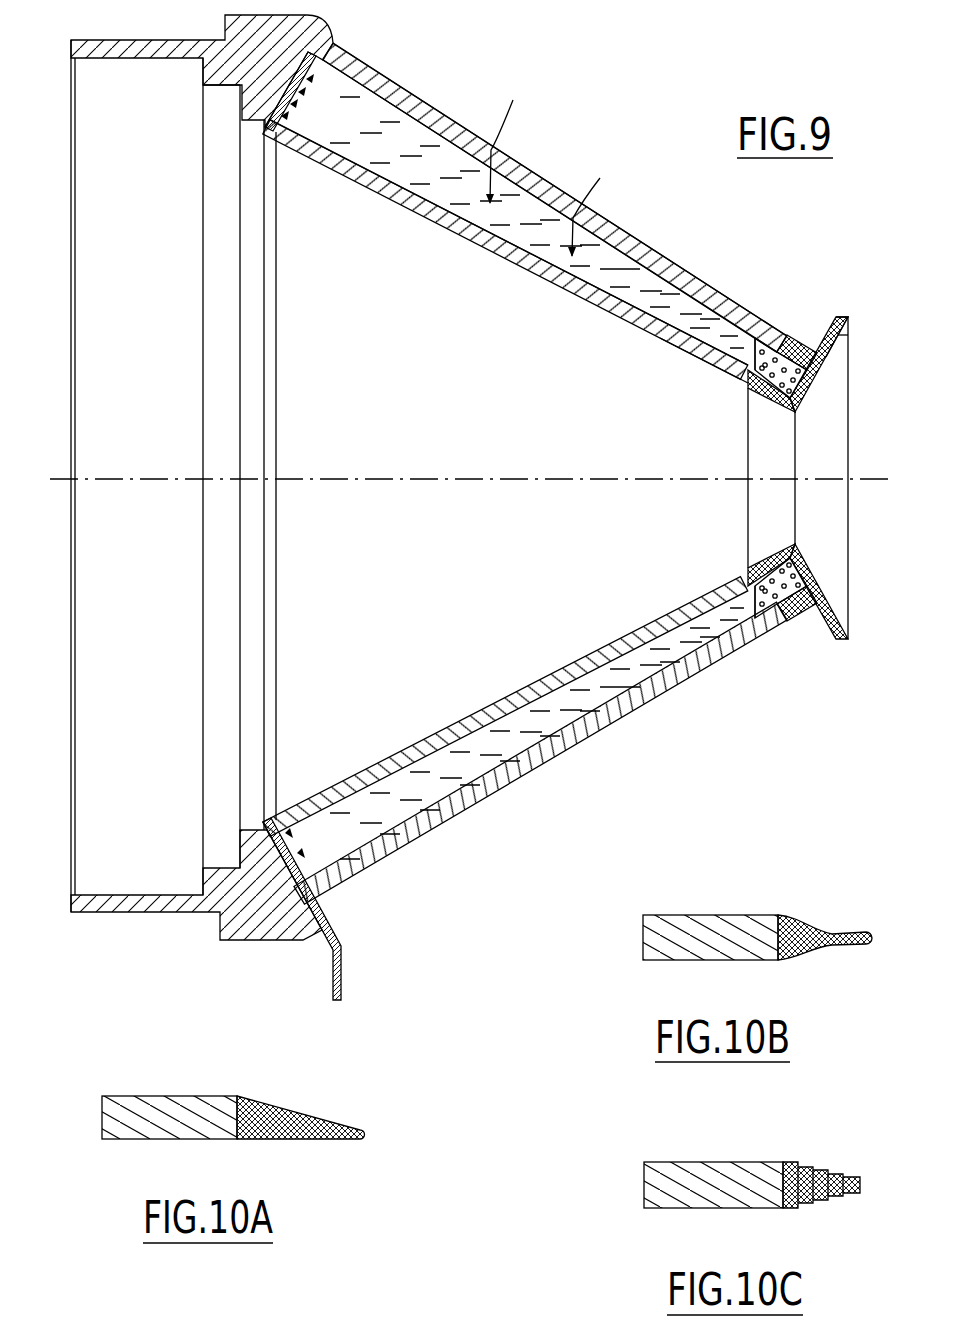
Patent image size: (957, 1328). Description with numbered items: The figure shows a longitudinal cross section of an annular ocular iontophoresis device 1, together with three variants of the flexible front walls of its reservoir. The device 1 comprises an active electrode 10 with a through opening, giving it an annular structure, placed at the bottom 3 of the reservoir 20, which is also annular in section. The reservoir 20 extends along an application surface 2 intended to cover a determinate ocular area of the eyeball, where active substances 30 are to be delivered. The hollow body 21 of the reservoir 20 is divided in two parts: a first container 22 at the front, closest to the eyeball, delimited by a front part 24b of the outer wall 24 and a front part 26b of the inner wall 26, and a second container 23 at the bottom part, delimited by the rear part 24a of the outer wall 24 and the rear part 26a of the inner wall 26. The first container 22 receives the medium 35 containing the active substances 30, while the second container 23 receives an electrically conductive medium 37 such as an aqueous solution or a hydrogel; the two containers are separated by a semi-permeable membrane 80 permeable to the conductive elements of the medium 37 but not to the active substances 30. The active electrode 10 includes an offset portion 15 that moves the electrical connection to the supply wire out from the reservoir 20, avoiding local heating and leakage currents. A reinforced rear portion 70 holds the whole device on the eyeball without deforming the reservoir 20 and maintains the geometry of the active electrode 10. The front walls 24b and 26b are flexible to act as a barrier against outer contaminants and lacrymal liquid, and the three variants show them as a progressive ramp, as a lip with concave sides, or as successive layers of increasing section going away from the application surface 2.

In FIG. 9, the device 1 is at (878, 482).
In FIG. 9, the application surface 2 is at (807, 557).
In FIG. 9, the bottom 3 is at (312, 74).
In FIG. 9, the active electrode 10 is at (283, 110).
In FIG. 9, the offset portion 15 is at (330, 932).
In FIG. 9, the reservoir 20 is at (665, 253).
In FIG. 9, the hollow body 21 is at (511, 137).
In FIG. 9, the first container 22 is at (827, 327).
In FIG. 9, the second container 23 is at (597, 202).
In FIG. 10A, the second container 23 is at (286, 1117).
In FIG. 10B, the second container 23 is at (825, 931).
In FIG. 10C, the second container 23 is at (815, 1172).
In FIG. 9, the outer wall 24 is at (447, 130).
In FIG. 10A, the outer wall 24 is at (193, 1115).
In FIG. 10B, the outer wall 24 is at (725, 937).
In FIG. 10C, the outer wall 24 is at (725, 1178).
In FIG. 9, the rear part of the outer wall 24a is at (546, 194).
In FIG. 9, the front part of the outer wall 24b is at (840, 336).
In FIG. 9, the inner wall 26 is at (356, 177).
In FIG. 9, the rear part of the inner wall 26a is at (458, 220).
In FIG. 9, the front part of the inner wall 26b is at (752, 395).
In FIG. 9, the active substances 30 is at (808, 347).
In FIG. 9, the medium 35 is at (805, 352).
In FIG. 9, the electrically conductive medium 37 is at (672, 320).
In FIG. 9, the rear portion 70 is at (228, 87).
In FIG. 9, the semi-permeable membrane 80 is at (755, 355).